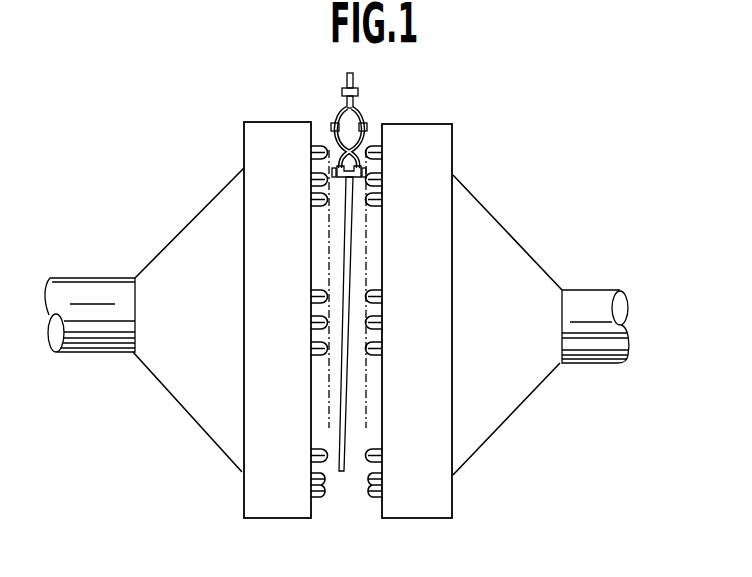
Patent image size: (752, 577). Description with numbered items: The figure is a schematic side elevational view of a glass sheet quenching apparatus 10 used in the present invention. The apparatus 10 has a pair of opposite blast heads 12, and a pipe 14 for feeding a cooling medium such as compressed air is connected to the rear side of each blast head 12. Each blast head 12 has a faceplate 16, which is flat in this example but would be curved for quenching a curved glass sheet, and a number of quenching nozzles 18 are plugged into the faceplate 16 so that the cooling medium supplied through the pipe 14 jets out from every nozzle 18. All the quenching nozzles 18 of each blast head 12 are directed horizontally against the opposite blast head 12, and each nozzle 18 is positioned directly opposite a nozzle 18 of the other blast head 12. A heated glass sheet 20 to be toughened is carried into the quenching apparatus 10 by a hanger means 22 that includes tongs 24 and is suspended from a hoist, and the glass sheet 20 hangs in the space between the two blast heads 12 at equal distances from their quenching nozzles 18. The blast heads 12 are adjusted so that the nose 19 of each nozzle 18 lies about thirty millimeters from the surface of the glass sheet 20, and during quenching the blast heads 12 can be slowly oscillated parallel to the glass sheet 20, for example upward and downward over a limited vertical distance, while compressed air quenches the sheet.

The quenching apparatus 10 is at (493, 184).
The blast head 12 is at (247, 496).
The pipe 14 is at (103, 280).
The faceplate 16 is at (322, 270).
The quenching nozzle 18 is at (320, 208).
The nose 19 is at (316, 347).
The glass sheet 20 is at (343, 472).
The hanger means 22 is at (353, 108).
The tongs 24 is at (336, 142).